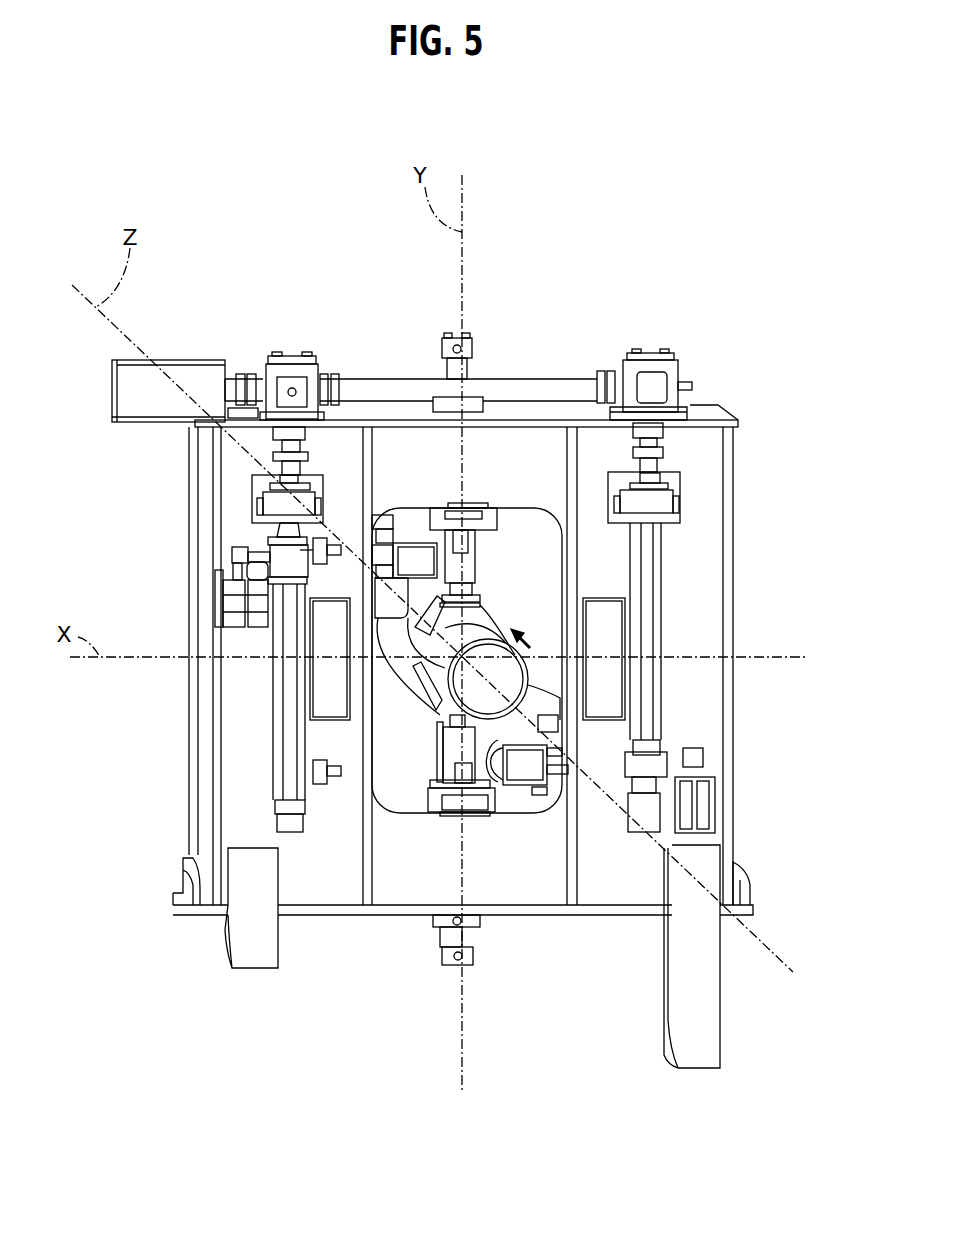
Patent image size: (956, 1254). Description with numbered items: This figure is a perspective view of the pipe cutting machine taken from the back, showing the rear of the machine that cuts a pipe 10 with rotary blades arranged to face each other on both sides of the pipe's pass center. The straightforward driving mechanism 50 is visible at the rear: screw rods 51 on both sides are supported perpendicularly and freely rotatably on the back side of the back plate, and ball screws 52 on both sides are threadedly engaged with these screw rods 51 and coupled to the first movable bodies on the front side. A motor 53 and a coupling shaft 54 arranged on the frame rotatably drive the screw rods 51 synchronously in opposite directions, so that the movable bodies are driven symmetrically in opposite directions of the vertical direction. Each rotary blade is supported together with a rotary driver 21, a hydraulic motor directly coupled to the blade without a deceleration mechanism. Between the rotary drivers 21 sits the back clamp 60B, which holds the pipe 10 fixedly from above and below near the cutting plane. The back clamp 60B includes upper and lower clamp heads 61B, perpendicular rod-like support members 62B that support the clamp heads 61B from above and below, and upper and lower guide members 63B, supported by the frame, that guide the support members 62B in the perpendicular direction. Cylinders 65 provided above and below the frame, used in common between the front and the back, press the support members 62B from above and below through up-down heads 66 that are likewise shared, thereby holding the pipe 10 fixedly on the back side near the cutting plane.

The pipe 10 is at (530, 678).
The rotary driver 21 is at (412, 558).
The straightforward driving mechanism 50 is at (547, 352).
The screw rod 51 is at (287, 647).
The ball screw 52 is at (268, 540).
The motor 53 is at (165, 355).
The coupling shaft 54 is at (512, 379).
The cylinder 65 is at (455, 340).
The up-down head 66 is at (478, 508).
The back clamp 60B is at (505, 542).
The clamp head 61B is at (440, 705).
The support member 62B is at (455, 750).
The guide member 63B is at (465, 800).